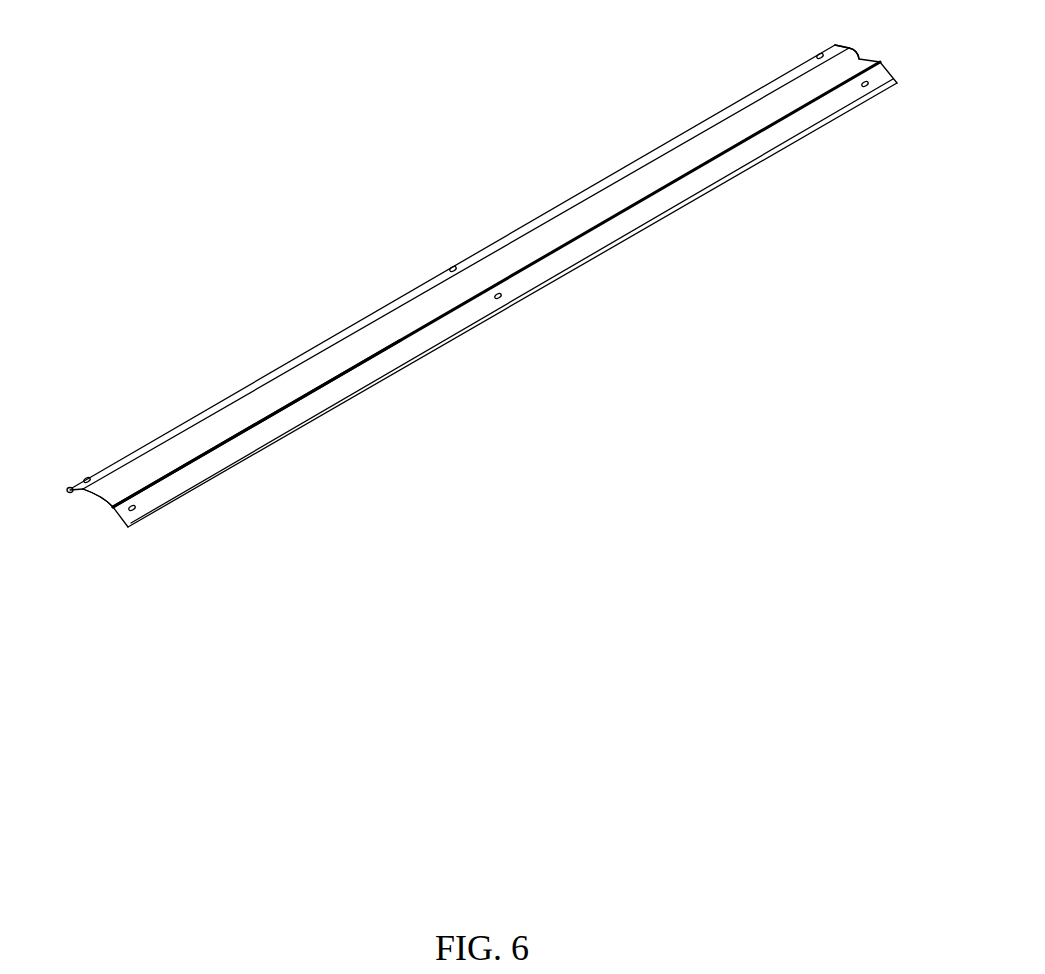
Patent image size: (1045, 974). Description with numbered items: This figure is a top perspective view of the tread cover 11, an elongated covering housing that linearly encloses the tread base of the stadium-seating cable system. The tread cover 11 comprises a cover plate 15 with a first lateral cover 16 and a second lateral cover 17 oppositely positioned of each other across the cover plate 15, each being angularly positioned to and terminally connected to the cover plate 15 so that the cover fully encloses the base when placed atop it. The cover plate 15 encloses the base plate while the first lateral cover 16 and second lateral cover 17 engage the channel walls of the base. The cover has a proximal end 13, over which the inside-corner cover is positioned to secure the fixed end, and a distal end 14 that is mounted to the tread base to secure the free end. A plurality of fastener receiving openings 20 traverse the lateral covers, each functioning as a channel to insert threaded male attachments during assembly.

The tread cover 11 is at (473, 283).
The proximal end 13 is at (783, 101).
The distal end 14 is at (163, 457).
The cover plate 15 is at (858, 69).
The first lateral cover 16 is at (742, 158).
The second lateral cover 17 is at (678, 139).
The fastener receiving openings 20 is at (88, 478).